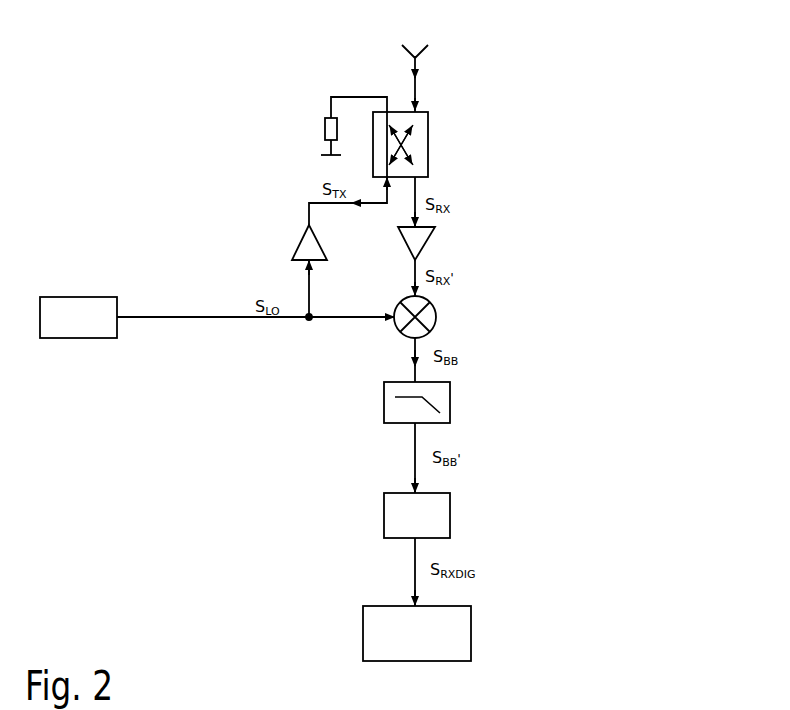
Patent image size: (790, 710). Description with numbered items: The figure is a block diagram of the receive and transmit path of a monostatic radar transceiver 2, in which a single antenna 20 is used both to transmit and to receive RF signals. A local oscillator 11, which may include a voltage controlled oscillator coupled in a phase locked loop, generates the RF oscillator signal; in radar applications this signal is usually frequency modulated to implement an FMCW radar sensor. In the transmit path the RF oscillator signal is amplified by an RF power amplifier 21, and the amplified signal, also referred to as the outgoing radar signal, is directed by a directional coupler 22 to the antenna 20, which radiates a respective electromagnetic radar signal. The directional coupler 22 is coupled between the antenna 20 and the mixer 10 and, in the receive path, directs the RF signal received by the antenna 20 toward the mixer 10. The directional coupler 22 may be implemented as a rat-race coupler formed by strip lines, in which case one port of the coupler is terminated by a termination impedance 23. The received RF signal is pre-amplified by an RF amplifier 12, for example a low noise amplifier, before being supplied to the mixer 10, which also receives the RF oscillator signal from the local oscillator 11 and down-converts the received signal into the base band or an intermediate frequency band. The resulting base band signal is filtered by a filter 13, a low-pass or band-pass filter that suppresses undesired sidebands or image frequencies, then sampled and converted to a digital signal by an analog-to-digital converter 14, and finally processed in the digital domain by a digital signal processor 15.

The radar transceiver 2 is at (690, 32).
The mixer 10 is at (436, 311).
The local oscillator 11 is at (80, 338).
The RF amplifier 12 is at (428, 244).
The filter 13 is at (450, 400).
The analog-to-digital converter 14 is at (450, 515).
The digital signal processor 15 is at (471, 633).
The antenna 20 is at (464, 49).
The RF power amplifier 21 is at (296, 246).
The directional coupler 22 is at (428, 140).
The termination impedance 23 is at (294, 126).